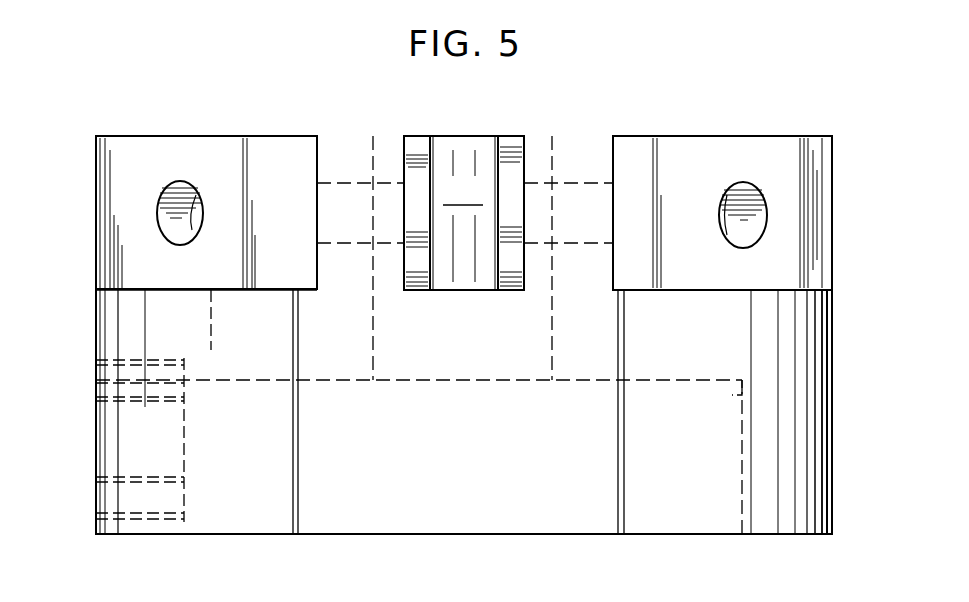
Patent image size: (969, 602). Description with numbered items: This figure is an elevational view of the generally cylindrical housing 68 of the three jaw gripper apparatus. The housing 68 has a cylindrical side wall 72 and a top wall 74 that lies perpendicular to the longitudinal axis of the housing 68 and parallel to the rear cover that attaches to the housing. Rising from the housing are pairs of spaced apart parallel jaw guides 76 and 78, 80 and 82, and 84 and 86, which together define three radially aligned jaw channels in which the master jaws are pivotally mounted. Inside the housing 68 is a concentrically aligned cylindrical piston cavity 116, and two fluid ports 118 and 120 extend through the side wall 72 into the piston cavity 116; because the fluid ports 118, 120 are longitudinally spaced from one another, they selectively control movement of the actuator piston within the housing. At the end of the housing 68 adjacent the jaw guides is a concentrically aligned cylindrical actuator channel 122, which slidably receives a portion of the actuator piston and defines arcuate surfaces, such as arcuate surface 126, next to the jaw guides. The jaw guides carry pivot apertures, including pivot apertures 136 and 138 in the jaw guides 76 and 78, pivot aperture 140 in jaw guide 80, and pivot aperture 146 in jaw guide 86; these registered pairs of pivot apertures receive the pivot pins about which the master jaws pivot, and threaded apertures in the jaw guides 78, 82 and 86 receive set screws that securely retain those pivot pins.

The housing 68 is at (160, 100).
The cylindrical side wall 72 is at (800, 442).
The top wall 74 is at (130, 289).
The jaw guide 76 is at (347, 136).
The jaw guide 78 is at (578, 136).
The jaw guide 80 is at (752, 136).
The jaw guide 82 is at (507, 136).
The jaw guide 84 is at (413, 136).
The jaw guide 86 is at (125, 136).
The cylindrical piston cavity 116 is at (715, 396).
The fluid port 118 is at (98, 396).
The fluid port 120 is at (108, 485).
The cylindrical actuator channel 122 is at (541, 322).
The arcuate surface 126 is at (463, 193).
The pivot aperture 136 is at (333, 183).
The pivot aperture 138 is at (602, 183).
The pivot aperture 140 is at (753, 227).
The pivot aperture 146 is at (165, 215).